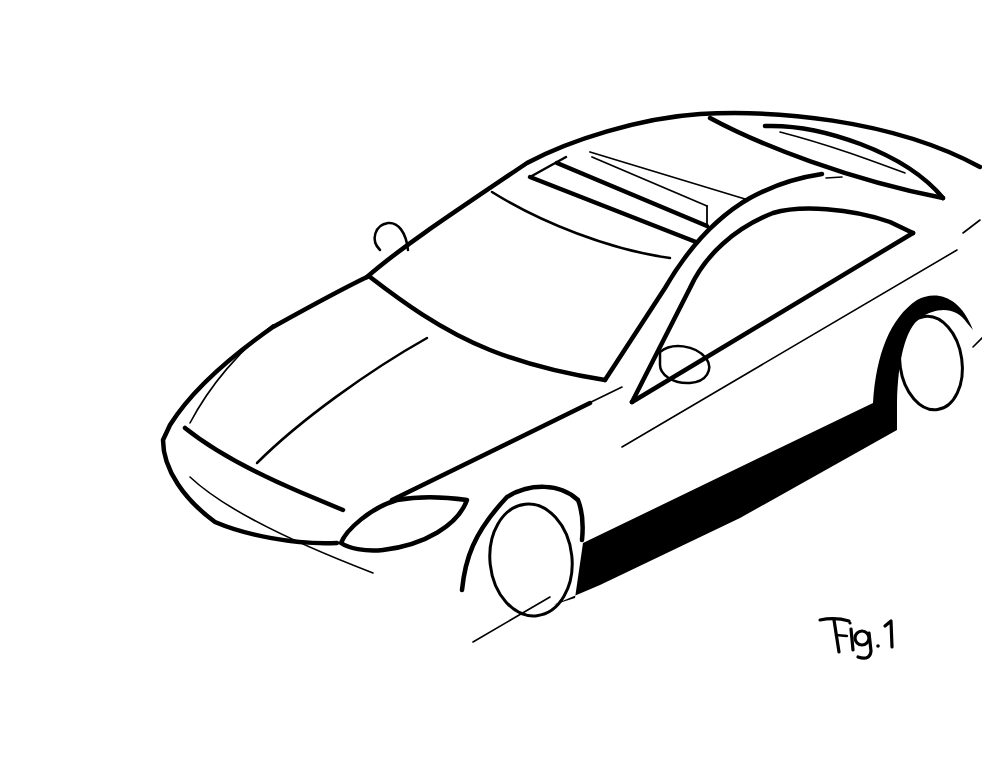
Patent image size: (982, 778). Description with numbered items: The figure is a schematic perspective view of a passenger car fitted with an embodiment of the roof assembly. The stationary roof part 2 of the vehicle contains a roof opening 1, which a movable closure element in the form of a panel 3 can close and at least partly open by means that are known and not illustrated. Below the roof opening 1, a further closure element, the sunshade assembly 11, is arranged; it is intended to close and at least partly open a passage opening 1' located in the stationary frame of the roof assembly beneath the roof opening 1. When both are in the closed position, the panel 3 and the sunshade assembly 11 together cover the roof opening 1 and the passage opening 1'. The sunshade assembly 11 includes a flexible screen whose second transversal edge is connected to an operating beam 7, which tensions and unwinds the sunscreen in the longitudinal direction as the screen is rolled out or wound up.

The roof opening 1 is at (606, 180).
The passage opening 1' is at (619, 157).
The stationary roof part 2 is at (517, 185).
The panel 3 is at (655, 144).
The operating beam 7 is at (627, 190).
The sunshade assembly 11 is at (608, 157).